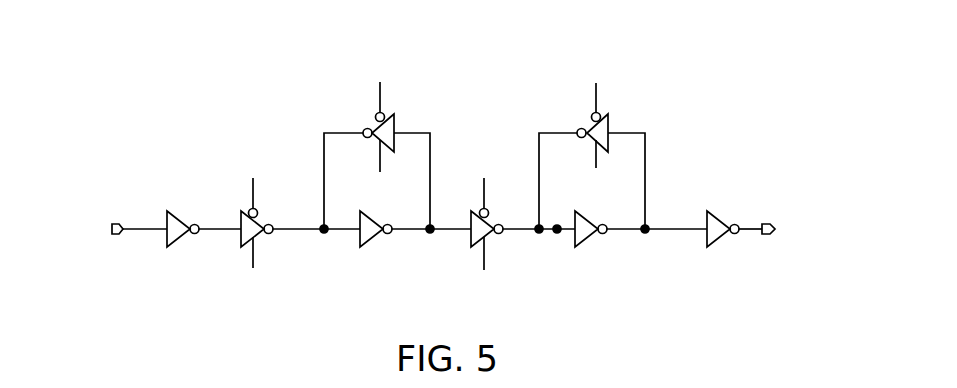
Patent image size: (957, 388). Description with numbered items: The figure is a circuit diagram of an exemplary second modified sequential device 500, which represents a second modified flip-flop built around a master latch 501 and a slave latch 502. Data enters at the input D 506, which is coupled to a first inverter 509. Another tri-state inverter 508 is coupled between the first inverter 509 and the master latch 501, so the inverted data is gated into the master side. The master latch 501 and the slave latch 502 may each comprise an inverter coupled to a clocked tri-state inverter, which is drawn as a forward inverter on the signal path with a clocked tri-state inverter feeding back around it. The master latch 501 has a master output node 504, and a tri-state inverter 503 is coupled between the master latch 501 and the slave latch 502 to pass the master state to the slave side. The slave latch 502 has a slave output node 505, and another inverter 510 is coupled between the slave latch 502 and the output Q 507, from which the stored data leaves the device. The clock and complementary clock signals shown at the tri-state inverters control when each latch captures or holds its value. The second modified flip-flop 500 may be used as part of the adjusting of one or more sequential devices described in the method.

The second modified sequential device 500 is at (741, 76).
The master latch 501 is at (322, 100).
The slave latch 502 is at (635, 80).
The tri-state inverter 503 is at (487, 118).
The master output node 504 is at (420, 247).
The slave output node 505 is at (648, 247).
The input D 506 is at (97, 206).
The output Q 507 is at (798, 206).
The tri-state inverter 508 is at (236, 260).
The first inverter 509 is at (178, 204).
The inverter 510 is at (713, 193).